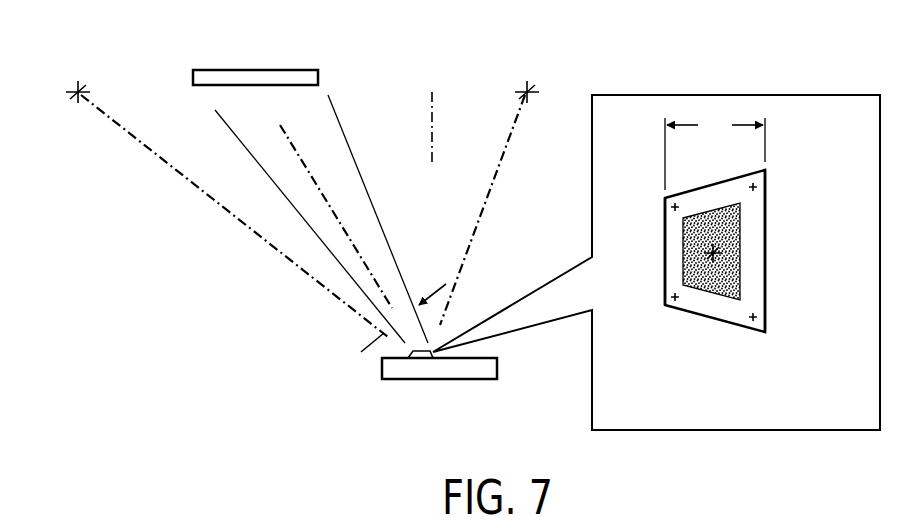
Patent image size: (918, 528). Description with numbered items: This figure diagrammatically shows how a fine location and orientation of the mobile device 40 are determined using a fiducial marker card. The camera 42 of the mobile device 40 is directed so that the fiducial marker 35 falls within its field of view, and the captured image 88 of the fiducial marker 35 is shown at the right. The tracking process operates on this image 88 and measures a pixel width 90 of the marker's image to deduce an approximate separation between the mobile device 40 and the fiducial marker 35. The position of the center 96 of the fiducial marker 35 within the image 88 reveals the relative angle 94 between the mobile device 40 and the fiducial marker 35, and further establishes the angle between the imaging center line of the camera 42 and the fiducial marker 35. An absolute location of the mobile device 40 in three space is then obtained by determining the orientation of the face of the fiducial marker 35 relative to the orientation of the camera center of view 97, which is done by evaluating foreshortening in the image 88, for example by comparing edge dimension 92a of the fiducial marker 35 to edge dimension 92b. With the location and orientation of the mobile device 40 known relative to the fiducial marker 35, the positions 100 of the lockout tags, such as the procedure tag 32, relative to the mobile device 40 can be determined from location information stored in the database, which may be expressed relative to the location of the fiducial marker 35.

The positions of the lockout tags 100 is at (82, 90).
The procedure tag 32 is at (71, 97).
The fiducial marker 35 is at (288, 70).
The camera center of view 97 is at (430, 108).
The relative angle 94 is at (339, 212).
The pixel width 90 is at (386, 331).
The camera 42 is at (420, 354).
The mobile device 40 is at (495, 380).
The image 88 is at (673, 412).
The edge dimension 92a is at (770, 252).
The edge dimension 92b is at (662, 252).
The center of the fiducial marker 96 is at (713, 257).